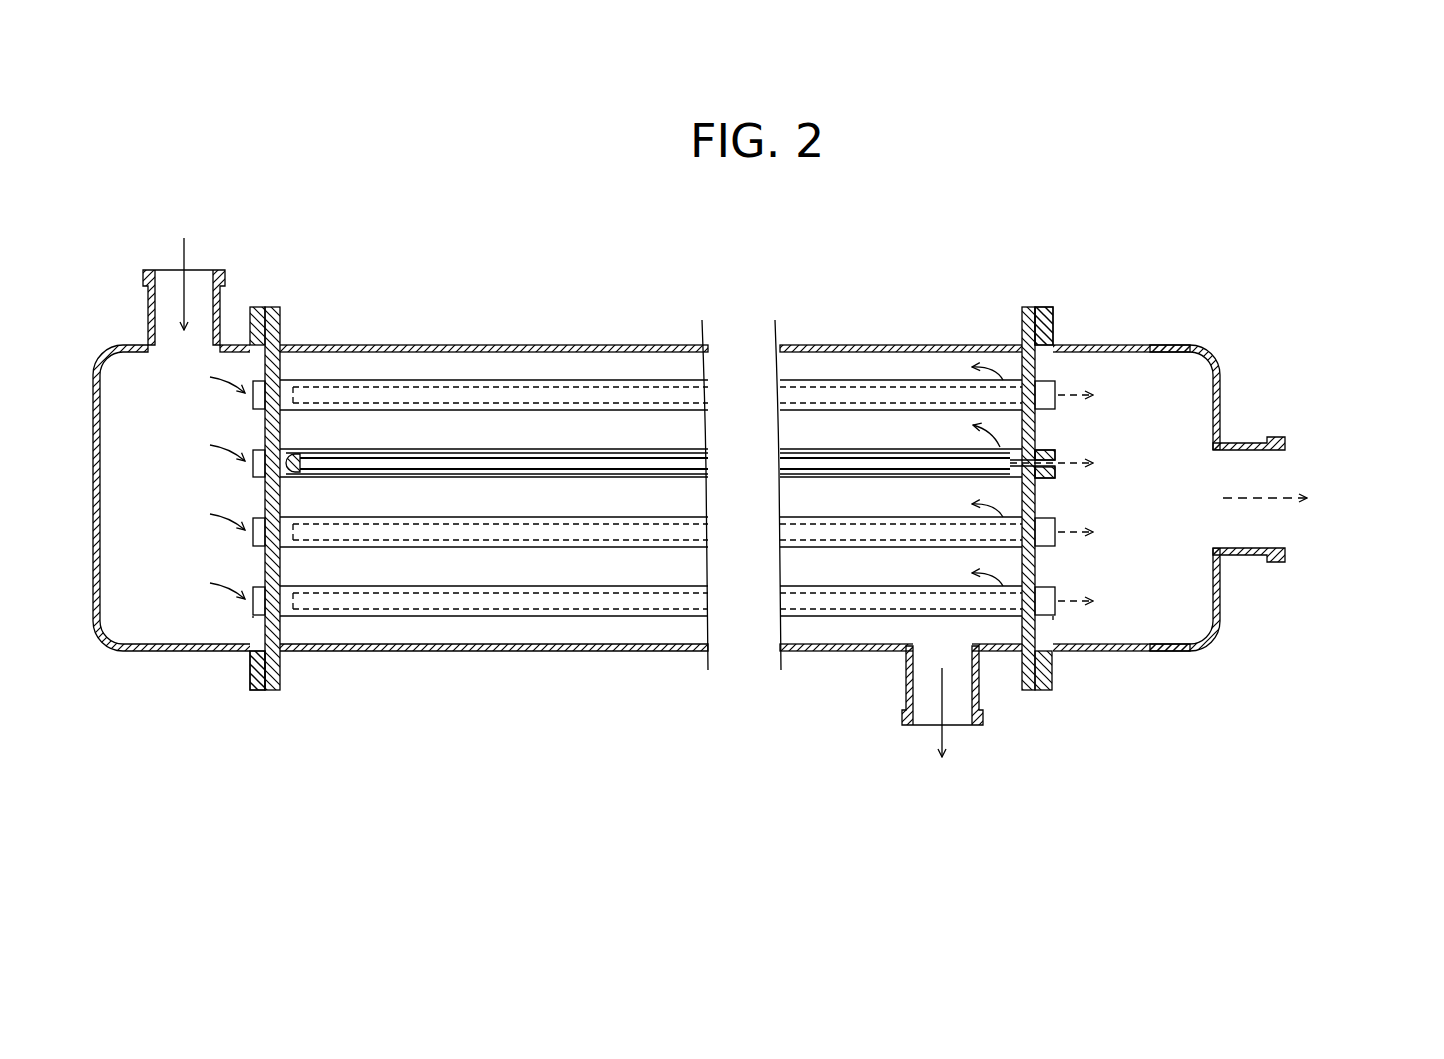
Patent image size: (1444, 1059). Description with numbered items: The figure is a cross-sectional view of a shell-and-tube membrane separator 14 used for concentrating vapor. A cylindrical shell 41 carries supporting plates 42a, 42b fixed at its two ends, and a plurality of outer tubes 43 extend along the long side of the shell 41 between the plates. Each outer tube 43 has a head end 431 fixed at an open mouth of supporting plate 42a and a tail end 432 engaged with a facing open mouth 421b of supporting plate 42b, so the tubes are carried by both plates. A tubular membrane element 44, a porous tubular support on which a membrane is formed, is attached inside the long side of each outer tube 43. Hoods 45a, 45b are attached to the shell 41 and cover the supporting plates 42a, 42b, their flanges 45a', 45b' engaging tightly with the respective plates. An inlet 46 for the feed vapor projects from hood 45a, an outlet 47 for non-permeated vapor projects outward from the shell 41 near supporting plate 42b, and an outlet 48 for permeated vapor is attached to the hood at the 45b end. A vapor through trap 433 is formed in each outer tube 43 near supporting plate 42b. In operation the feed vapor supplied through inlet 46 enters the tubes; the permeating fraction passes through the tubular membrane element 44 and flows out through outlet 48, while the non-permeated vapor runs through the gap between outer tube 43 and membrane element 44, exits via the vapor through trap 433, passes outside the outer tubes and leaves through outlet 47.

The membrane separator 14 is at (687, 273).
The cylindrical shell 41 is at (643, 345).
The supporting plate 42a is at (282, 322).
The supporting plate 42b is at (1023, 330).
The outer tube 43 is at (885, 380).
The tubular membrane element 44 is at (812, 461).
The hood 45a is at (399, 474).
The flange 45a' is at (232, 694).
The hood 45b is at (1184, 470).
The flange 45b' is at (1086, 324).
The inlet 46 is at (225, 300).
The outlet 47 is at (905, 690).
The outlet 48 is at (1247, 556).
The open mouth 421b is at (283, 633).
The head end 431 is at (253, 620).
The tail end 432 is at (1055, 620).
The vapor through trap 433 is at (1000, 452).